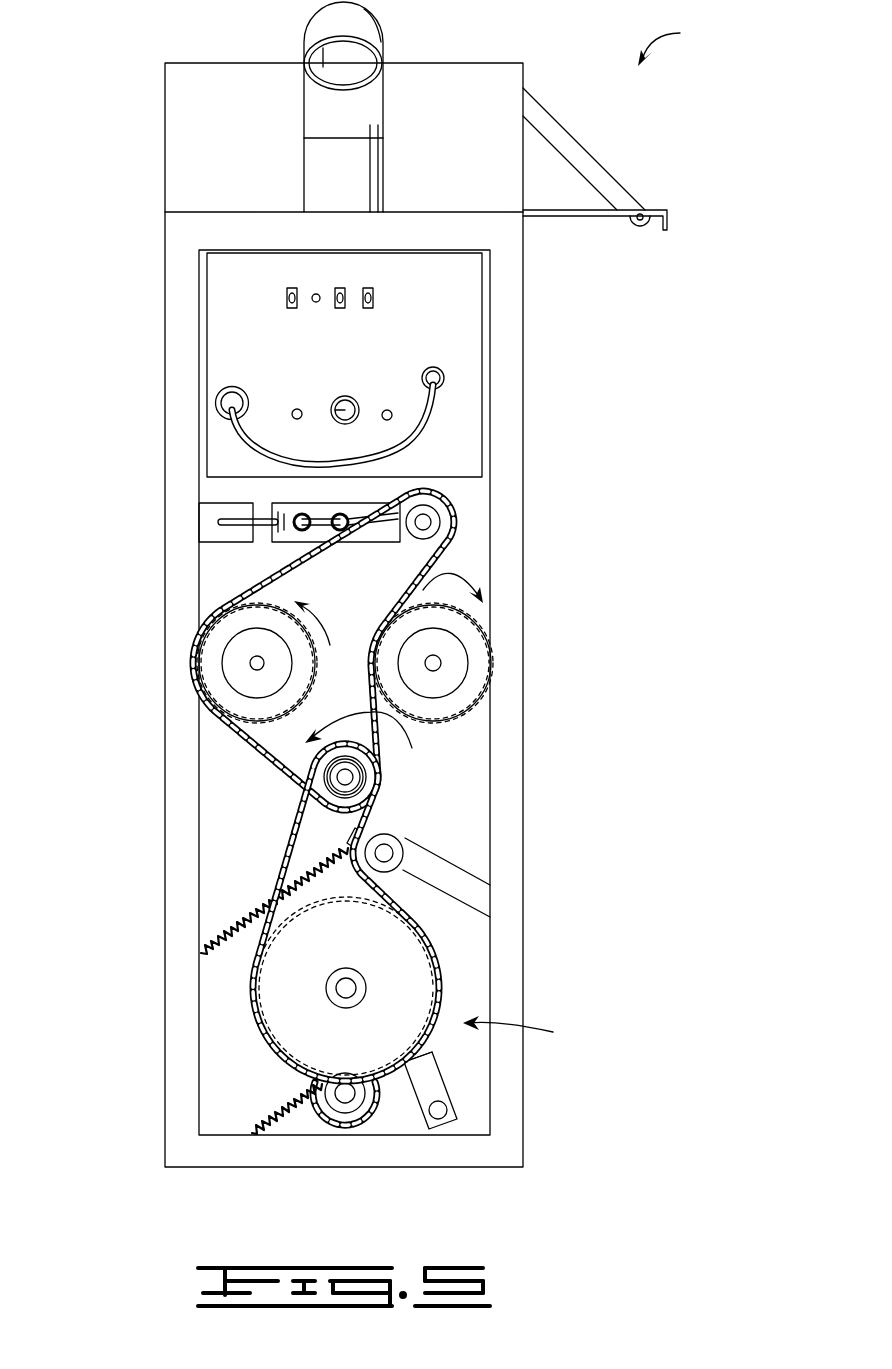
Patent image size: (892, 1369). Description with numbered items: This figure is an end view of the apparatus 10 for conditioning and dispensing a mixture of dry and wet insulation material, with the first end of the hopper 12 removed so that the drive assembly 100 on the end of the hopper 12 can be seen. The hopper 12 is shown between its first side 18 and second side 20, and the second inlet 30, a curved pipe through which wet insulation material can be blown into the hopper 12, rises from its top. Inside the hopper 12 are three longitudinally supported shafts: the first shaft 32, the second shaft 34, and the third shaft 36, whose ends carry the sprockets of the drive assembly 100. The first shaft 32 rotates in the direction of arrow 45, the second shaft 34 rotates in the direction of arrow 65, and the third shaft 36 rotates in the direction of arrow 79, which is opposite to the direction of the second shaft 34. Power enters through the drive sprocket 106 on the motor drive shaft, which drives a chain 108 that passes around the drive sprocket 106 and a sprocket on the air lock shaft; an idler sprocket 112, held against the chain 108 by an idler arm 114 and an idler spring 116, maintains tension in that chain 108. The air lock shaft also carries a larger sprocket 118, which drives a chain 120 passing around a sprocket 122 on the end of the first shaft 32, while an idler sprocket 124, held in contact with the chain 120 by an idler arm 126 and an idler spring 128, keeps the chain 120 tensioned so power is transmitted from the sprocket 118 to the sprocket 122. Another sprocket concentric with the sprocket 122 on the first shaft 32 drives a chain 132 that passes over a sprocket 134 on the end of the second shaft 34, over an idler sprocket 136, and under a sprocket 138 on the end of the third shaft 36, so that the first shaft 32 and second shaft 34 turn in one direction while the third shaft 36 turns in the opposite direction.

The apparatus 10 is at (675, 44).
The hopper 12 is at (165, 343).
The first side 18 is at (523, 352).
The second side 20 is at (165, 435).
The second inlet 30 is at (384, 18).
The first shaft 32 is at (351, 777).
The second shaft 34 is at (255, 663).
The third shaft 36 is at (437, 663).
The arrow 45 is at (374, 737).
The arrow 65 is at (326, 620).
The arrow 79 is at (462, 566).
The drive assembly 100 is at (531, 1031).
The drive sprocket 106 is at (355, 1115).
The chain 108 is at (330, 1115).
The idler sprocket 112 is at (430, 1043).
The idler arm 114 is at (457, 1087).
The idler spring 116 is at (273, 1113).
The sprocket 118 is at (290, 1002).
The chain 120 is at (287, 866).
The sprocket 122 is at (356, 795).
The idler sprocket 124 is at (407, 840).
The idler arm 126 is at (460, 890).
The idler spring 128 is at (231, 925).
The chain 132 is at (245, 740).
The sprocket 134 is at (205, 668).
The idler sprocket 136 is at (450, 510).
The sprocket 138 is at (466, 695).